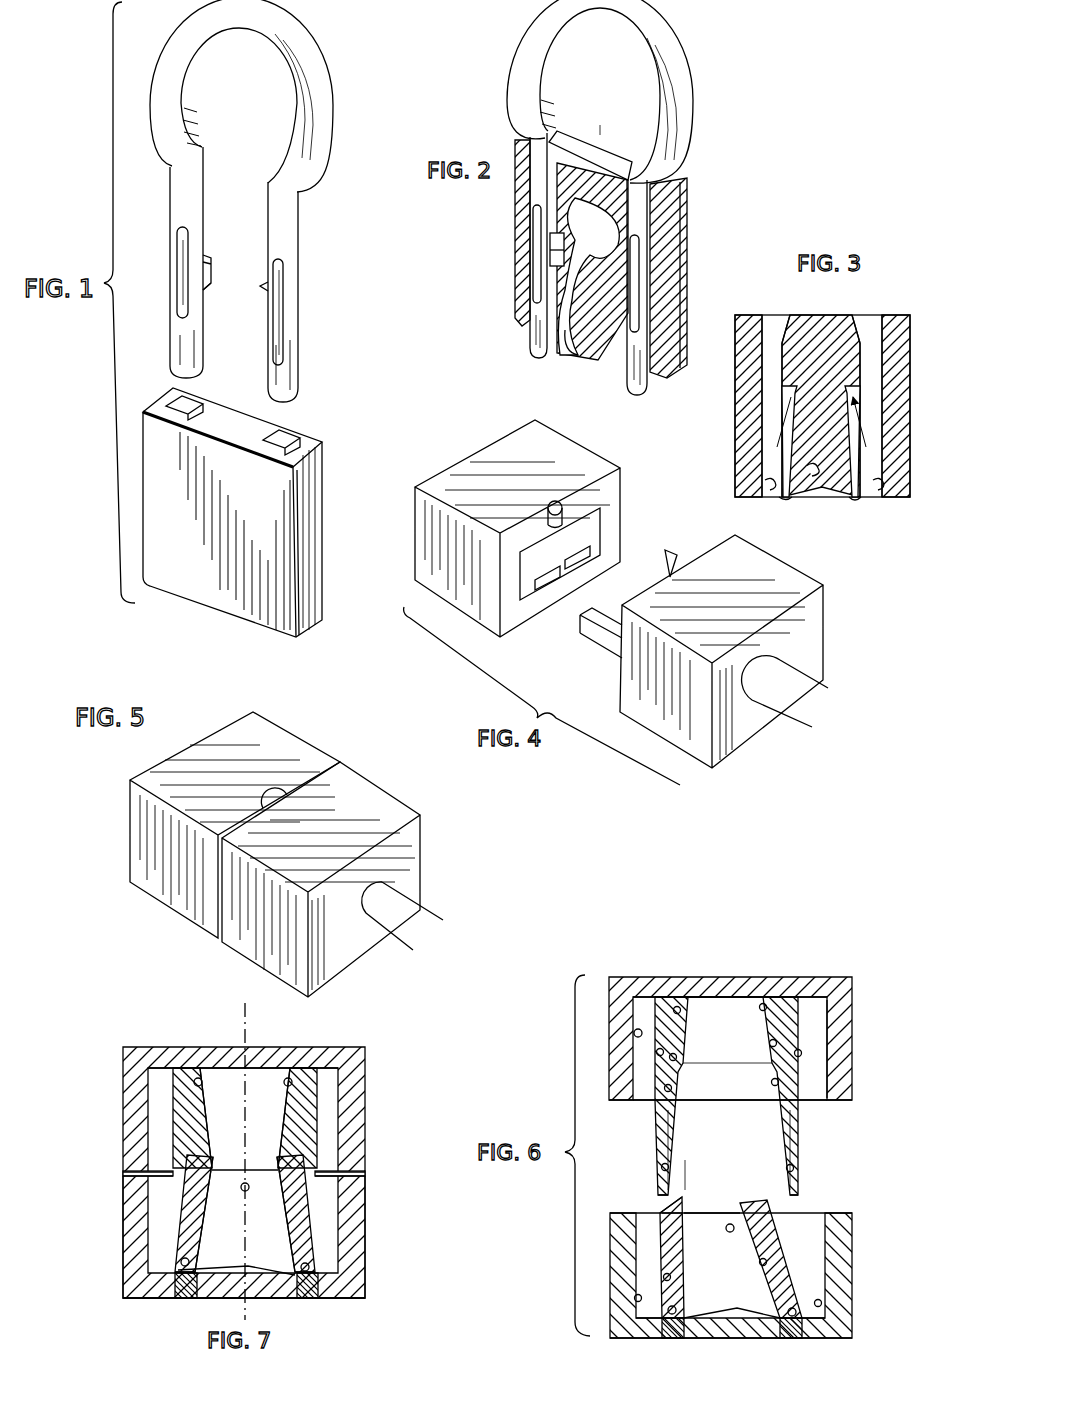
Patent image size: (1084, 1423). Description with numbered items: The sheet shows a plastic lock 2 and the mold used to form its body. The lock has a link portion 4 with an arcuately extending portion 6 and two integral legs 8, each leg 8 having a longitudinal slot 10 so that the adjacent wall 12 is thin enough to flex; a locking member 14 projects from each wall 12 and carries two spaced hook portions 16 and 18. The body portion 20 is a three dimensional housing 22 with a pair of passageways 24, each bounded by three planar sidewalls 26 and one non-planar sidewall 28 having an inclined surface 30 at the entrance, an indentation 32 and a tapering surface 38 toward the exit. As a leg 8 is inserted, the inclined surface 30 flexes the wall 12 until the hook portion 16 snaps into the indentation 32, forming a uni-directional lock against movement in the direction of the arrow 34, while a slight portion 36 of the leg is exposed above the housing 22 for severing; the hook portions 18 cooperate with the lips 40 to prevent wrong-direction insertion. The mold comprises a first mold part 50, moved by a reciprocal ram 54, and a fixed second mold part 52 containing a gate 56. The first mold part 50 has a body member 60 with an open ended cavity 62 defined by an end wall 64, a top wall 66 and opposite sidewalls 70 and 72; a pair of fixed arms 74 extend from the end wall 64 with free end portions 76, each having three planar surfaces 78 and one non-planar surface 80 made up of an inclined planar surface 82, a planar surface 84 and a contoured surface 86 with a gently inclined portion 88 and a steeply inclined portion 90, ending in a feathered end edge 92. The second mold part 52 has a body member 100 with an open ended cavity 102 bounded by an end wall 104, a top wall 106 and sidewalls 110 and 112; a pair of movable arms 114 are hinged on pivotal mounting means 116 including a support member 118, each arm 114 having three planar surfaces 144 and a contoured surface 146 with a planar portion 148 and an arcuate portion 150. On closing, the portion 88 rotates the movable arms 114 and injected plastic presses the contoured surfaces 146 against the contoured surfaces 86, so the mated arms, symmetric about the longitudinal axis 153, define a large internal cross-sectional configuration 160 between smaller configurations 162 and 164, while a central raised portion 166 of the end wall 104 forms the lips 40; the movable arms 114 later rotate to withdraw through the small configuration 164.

In FIG. 1, the plastic lock 2 is at (306, 410).
In FIG. 2, the plastic lock 2 is at (500, 258).
In FIG. 1, the link portion 4 is at (338, 50).
In FIG. 2, the link portion 4 is at (702, 62).
In FIG. 1, the arcuately extending portion 6 is at (331, 104).
In FIG. 2, the arcuately extending portion 6 is at (686, 127).
In FIG. 1, the leg 8 is at (178, 196).
In FIG. 2, the leg 8 is at (543, 177).
In FIG. 1, the slot 10 is at (183, 306).
In FIG. 2, the slot 10 is at (540, 278).
In FIG. 1, the wall 12 is at (182, 250).
In FIG. 2, the wall 12 is at (545, 218).
In FIG. 2, the locking member 14 is at (565, 249).
In FIG. 1, the hook portion 16 is at (263, 285).
In FIG. 2, the hook portion 16 is at (588, 276).
In FIG. 1, the hook portion 18 is at (266, 322).
In FIG. 2, the hook portion 18 is at (576, 345).
In FIG. 3, the body portion 20 is at (905, 302).
In FIG. 1, the housing 22 is at (318, 550).
In FIG. 2, the housing 22 is at (681, 378).
In FIG. 3, the housing 22 is at (897, 394).
In FIG. 1, the passageway 24 is at (173, 393).
In FIG. 3, the passageway 24 is at (768, 318).
In FIG. 1, the sidewall 26 is at (168, 411).
In FIG. 3, the sidewall 26 is at (760, 479).
In FIG. 3, the sidewall 28 is at (863, 357).
In FIG. 3, the inclined surface 30 is at (790, 320).
In FIG. 3, the indentation 32 is at (821, 441).
In FIG. 2, the arrow 34 is at (600, 80).
In FIG. 2, the slight portion 36 is at (531, 152).
In FIG. 3, the surface 38 is at (820, 468).
In FIG. 3, the lip 40 is at (786, 500).
In FIG. 4, the first mold part 50 is at (830, 623).
In FIG. 5, the first mold part 50 is at (414, 797).
In FIG. 4, the second mold part 52 is at (488, 435).
In FIG. 5, the second mold part 52 is at (300, 727).
In FIG. 4, the reciprocal ram 54 is at (792, 700).
In FIG. 5, the reciprocal ram 54 is at (410, 910).
In FIG. 4, the gate 56 is at (568, 505).
In FIG. 5, the gate 56 is at (280, 798).
In FIG. 7, the gate 56 is at (242, 1191).
In FIG. 6, the gate 56 is at (731, 1223).
In FIG. 7, the body member 60 is at (370, 1050).
In FIG. 6, the body member 60 is at (628, 960).
In FIG. 6, the open ended cavity 62 is at (805, 1107).
In FIG. 7, the end wall 64 is at (252, 1068).
In FIG. 6, the end wall 64 is at (716, 995).
In FIG. 6, the top wall 66 is at (752, 1043).
In FIG. 6, the sidewall 70 is at (636, 1034).
In FIG. 6, the sidewall 72 is at (823, 1081).
In FIG. 7, the fixed arm 74 is at (176, 1118).
In FIG. 6, the fixed arm 74 is at (660, 1017).
In FIG. 6, the free end portion 76 is at (660, 1133).
In FIG. 6, the planar surface 78 is at (658, 1054).
In FIG. 6, the non-planar surface 80 is at (763, 1068).
In FIG. 7, the inclined planar surface 82 is at (290, 1087).
In FIG. 6, the inclined planar surface 82 is at (760, 1008).
In FIG. 6, the planar surface 84 is at (770, 1044).
In FIG. 7, the contoured surface 86 is at (183, 1188).
In FIG. 6, the contoured surface 86 is at (780, 1118).
In FIG. 6, the portion 88 is at (663, 1168).
In FIG. 6, the portion 90 is at (667, 1090).
In FIG. 6, the end edge 92 is at (658, 1193).
In FIG. 7, the body member 100 is at (377, 1292).
In FIG. 6, the body member 100 is at (563, 1258).
In FIG. 6, the open ended cavity 102 is at (692, 1193).
In FIG. 7, the end wall 104 is at (353, 1300).
In FIG. 6, the end wall 104 is at (643, 1320).
In FIG. 6, the top wall 106 is at (722, 1255).
In FIG. 6, the sidewall 110 is at (635, 1299).
In FIG. 6, the sidewall 112 is at (822, 1304).
In FIG. 7, the movable arm 114 is at (190, 1202).
In FIG. 6, the movable arm 114 is at (670, 1238).
In FIG. 6, the pivotal mounting means 116 is at (680, 1322).
In FIG. 7, the support member 118 is at (187, 1295).
In FIG. 6, the support member 118 is at (780, 1328).
In FIG. 6, the planar surface 144 is at (760, 1262).
In FIG. 7, the contoured surface 146 is at (308, 1215).
In FIG. 6, the contoured surface 146 is at (657, 1255).
In FIG. 6, the planar portion 148 is at (663, 1277).
In FIG. 6, the arcuate portion 150 is at (660, 1212).
In FIG. 7, the longitudinal axis 153 is at (245, 1010).
In FIG. 7, the large internal transverse cross-sectional configuration 160 is at (272, 1163).
In FIG. 7, the small internal configuration 162 is at (284, 1117).
In FIG. 7, the small internal cross-sectional configuration 164 is at (288, 1263).
In FIG. 7, the central raised portion 166 is at (249, 1283).
In FIG. 6, the central raised portion 166 is at (737, 1312).